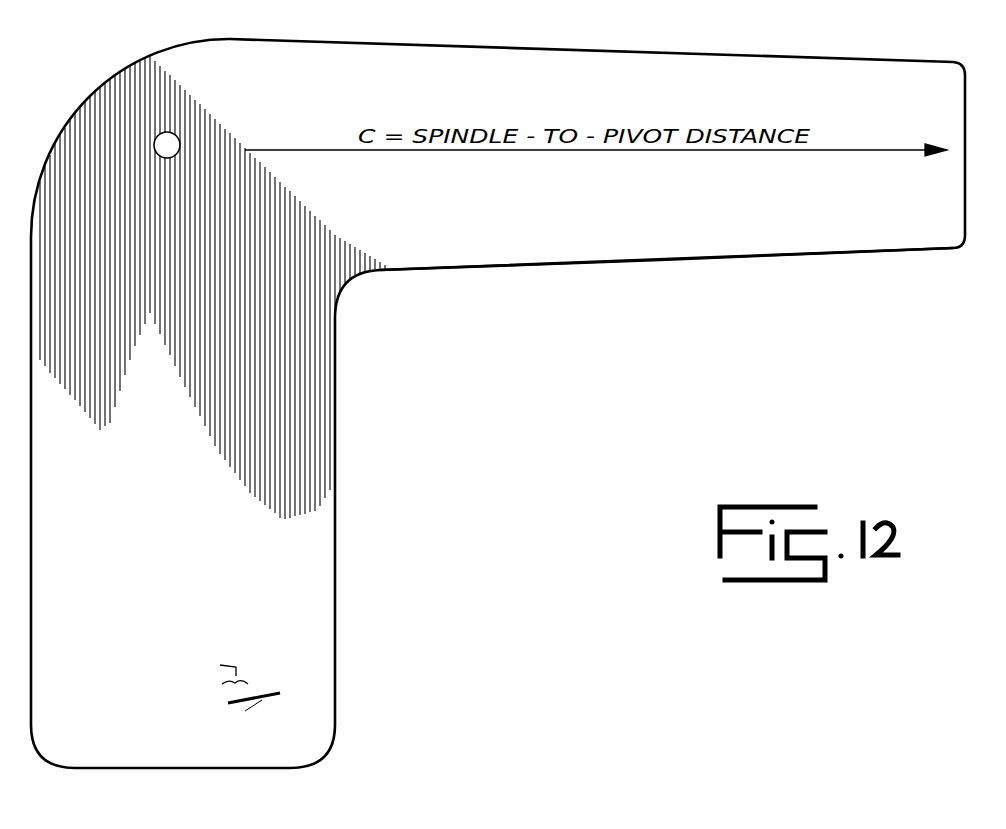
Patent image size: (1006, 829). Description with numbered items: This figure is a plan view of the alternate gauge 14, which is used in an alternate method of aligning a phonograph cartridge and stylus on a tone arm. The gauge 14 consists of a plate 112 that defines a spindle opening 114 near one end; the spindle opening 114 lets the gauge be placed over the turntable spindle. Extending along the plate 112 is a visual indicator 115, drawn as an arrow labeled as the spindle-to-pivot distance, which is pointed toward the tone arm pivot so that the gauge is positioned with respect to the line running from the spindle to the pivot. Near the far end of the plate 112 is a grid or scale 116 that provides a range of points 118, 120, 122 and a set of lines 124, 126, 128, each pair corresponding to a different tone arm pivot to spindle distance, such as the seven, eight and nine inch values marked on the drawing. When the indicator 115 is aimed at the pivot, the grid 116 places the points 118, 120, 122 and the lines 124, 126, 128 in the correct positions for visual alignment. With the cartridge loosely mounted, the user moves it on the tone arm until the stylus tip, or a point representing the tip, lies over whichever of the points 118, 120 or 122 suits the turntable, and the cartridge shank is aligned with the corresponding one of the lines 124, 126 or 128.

The alternate gauge 14 is at (608, 248).
The plate 112 is at (450, 230).
The spindle opening 114 is at (155, 143).
The visual indicator 115 is at (743, 152).
The grid 116 is at (245, 712).
The point 118 is at (223, 737).
The point 120 is at (223, 737).
The point 122 is at (236, 676).
The line 124 is at (362, 708).
The line 126 is at (362, 708).
The line 128 is at (258, 720).